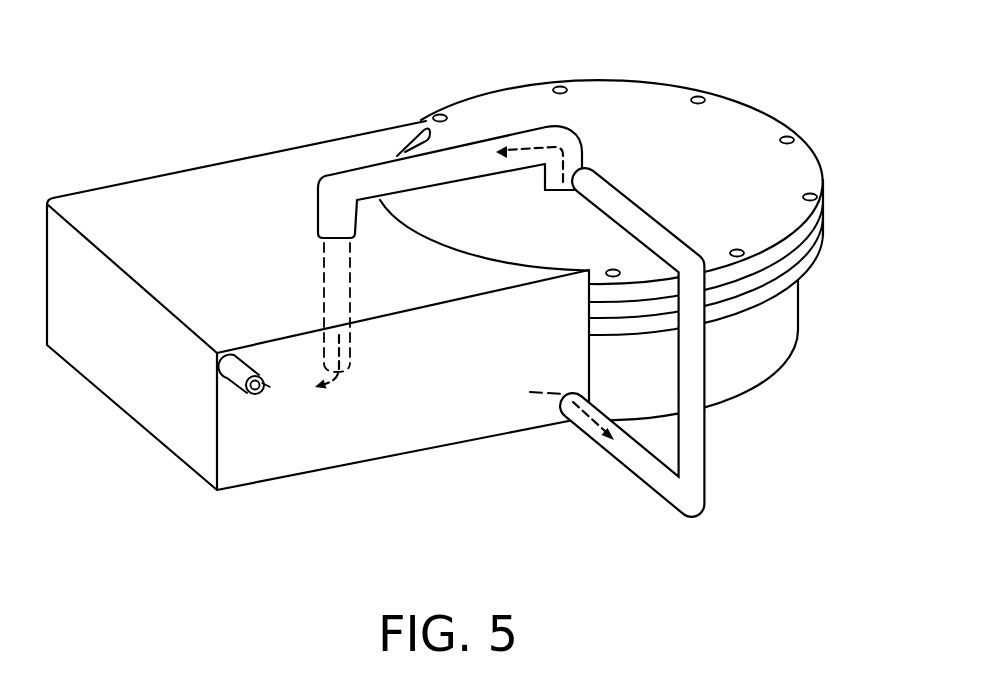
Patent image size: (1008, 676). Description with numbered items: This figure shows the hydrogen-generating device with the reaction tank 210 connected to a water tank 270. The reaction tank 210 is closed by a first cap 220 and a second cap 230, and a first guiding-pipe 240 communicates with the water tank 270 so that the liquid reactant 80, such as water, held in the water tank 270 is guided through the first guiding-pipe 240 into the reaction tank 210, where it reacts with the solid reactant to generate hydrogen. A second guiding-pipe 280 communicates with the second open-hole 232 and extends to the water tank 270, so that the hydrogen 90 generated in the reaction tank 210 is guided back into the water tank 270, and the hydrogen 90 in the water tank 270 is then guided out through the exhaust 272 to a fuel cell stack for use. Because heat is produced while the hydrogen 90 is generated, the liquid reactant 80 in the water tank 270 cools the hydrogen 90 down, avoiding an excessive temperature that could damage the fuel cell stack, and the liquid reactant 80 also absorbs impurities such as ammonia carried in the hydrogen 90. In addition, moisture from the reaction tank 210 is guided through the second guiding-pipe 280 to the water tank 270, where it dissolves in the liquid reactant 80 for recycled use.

The liquid reactant 80 is at (543, 396).
The hydrogen 90 is at (530, 147).
The reaction tank 210 is at (780, 318).
The first cap 220 is at (812, 232).
The second cap 230 is at (760, 122).
The second open-hole 232 is at (542, 190).
The first guiding-pipe 240 is at (627, 205).
The water tank 270 is at (132, 388).
The exhaust 272 is at (260, 390).
The second guiding-pipe 280 is at (367, 183).